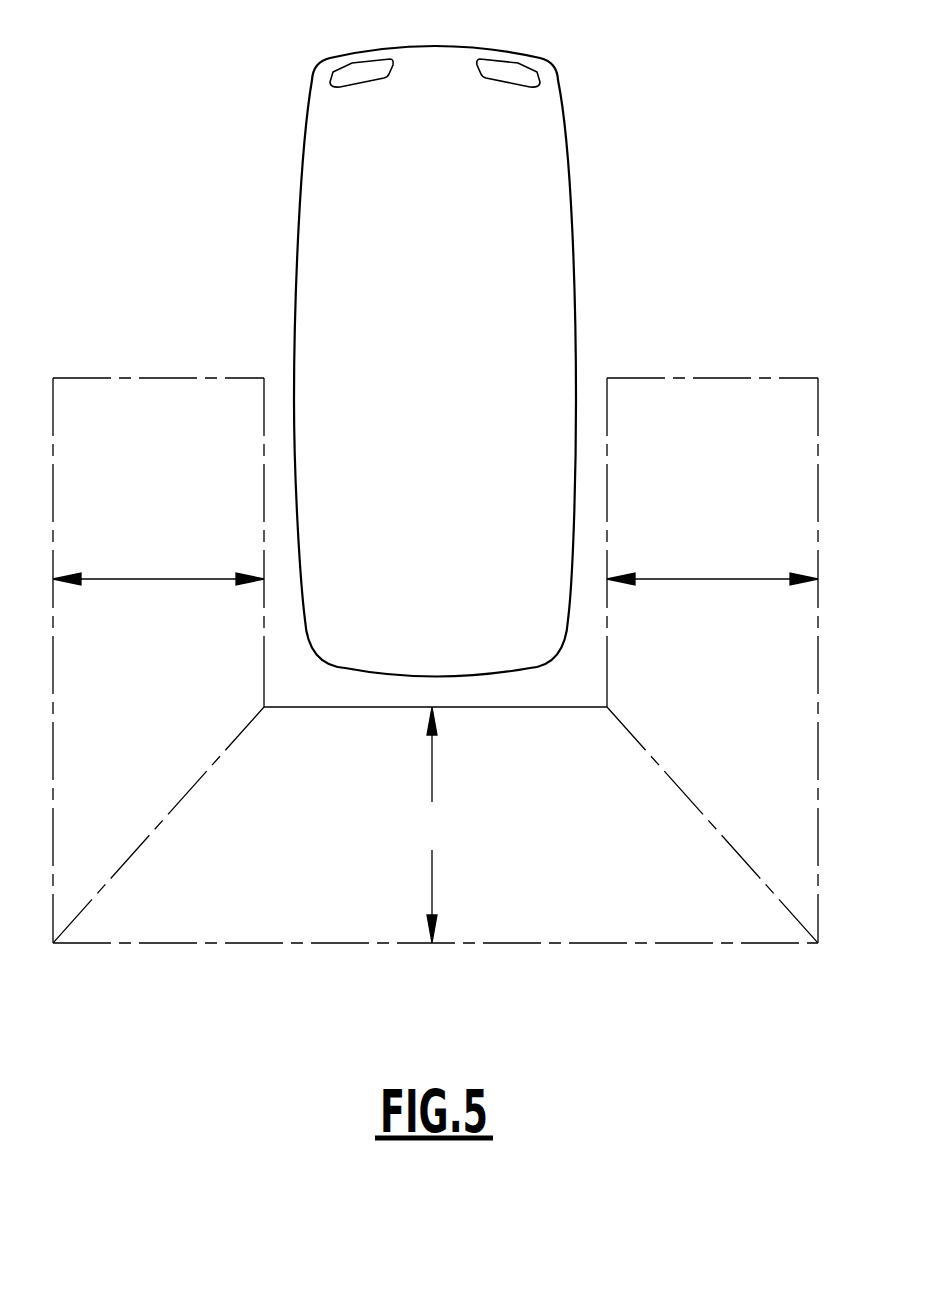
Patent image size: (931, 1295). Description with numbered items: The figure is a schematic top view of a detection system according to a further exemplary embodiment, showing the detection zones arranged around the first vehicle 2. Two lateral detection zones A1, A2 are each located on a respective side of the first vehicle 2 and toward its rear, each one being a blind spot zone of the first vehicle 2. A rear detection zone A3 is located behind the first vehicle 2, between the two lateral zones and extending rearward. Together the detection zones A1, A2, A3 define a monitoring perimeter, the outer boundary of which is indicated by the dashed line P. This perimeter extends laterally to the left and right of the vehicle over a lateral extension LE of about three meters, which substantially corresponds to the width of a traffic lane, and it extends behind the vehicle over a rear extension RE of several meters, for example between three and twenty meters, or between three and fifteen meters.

The first vehicle 2 is at (523, 158).
The lateral detection zone A1 is at (131, 400).
The lateral detection zone A2 is at (684, 400).
The rear detection zone A3 is at (498, 898).
The parking spot boundary P is at (720, 943).
The lateral extension LE is at (435, 560).
The rear extension RE is at (431, 825).